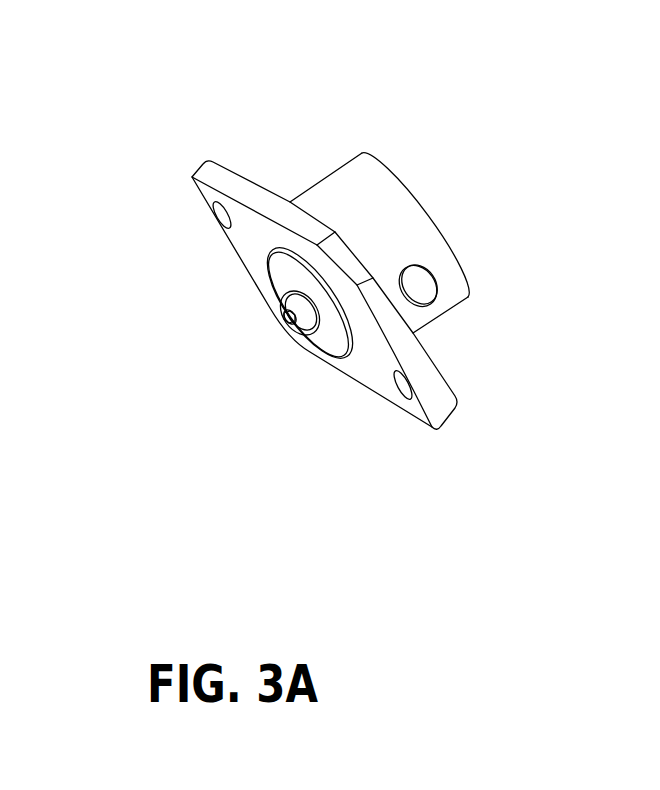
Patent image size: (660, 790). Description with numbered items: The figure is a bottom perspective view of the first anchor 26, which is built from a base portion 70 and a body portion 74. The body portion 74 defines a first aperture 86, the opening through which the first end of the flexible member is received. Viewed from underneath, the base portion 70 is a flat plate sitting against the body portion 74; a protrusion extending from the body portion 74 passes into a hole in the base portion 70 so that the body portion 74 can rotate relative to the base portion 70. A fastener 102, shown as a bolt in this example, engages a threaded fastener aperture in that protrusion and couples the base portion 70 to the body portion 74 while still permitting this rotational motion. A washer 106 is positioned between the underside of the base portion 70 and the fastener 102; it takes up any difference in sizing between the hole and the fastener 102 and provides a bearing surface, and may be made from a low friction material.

The first anchor 26 is at (246, 109).
The base portion 70 is at (227, 245).
The body portion 74 is at (397, 172).
The first aperture 86 is at (428, 308).
The washer 106 is at (280, 277).
The fastener 102 is at (300, 322).